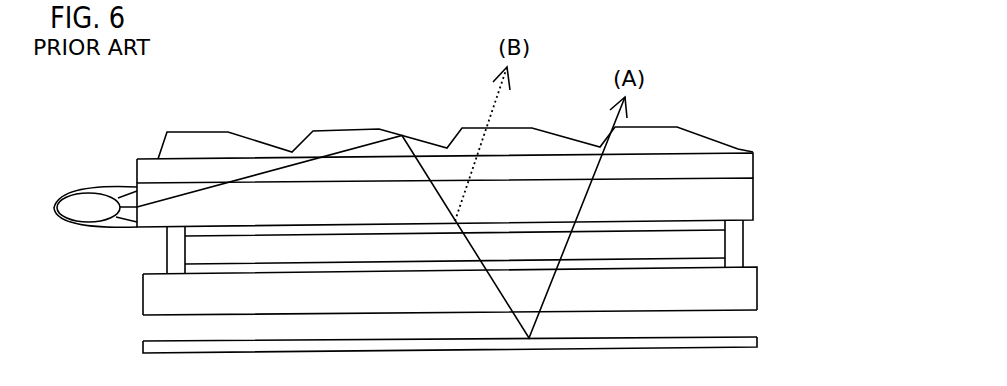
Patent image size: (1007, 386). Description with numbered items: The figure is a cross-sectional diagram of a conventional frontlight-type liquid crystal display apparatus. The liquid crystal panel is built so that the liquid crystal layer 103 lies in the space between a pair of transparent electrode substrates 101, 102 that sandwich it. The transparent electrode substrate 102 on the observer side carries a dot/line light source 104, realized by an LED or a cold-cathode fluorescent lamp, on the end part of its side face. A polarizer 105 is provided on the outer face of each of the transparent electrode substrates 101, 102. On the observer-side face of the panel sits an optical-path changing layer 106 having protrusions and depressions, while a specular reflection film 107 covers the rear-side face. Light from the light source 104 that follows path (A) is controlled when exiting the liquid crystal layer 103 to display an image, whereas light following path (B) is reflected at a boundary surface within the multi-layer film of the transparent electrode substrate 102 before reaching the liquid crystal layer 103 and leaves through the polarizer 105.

The transparent electrode substrate 101 is at (757, 287).
The transparent electrode substrate 102 is at (753, 199).
The liquid crystal layer 103 is at (703, 243).
The dot/line light source 104 is at (88, 190).
The polarizer 105 is at (753, 166).
The optical-path changing layer 106 is at (727, 143).
The specular reflection film 107 is at (757, 343).